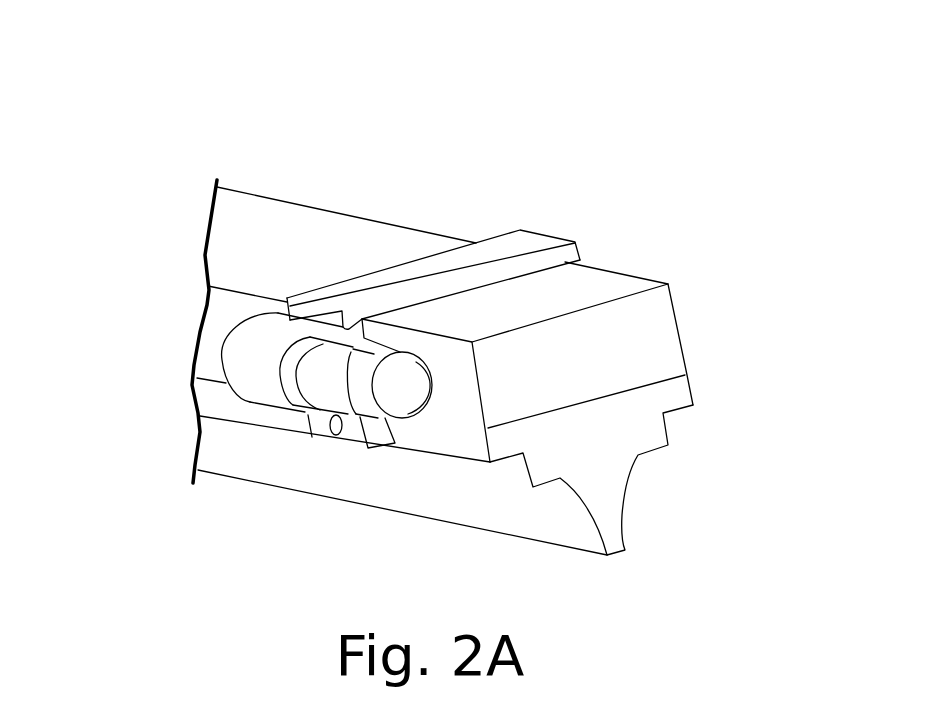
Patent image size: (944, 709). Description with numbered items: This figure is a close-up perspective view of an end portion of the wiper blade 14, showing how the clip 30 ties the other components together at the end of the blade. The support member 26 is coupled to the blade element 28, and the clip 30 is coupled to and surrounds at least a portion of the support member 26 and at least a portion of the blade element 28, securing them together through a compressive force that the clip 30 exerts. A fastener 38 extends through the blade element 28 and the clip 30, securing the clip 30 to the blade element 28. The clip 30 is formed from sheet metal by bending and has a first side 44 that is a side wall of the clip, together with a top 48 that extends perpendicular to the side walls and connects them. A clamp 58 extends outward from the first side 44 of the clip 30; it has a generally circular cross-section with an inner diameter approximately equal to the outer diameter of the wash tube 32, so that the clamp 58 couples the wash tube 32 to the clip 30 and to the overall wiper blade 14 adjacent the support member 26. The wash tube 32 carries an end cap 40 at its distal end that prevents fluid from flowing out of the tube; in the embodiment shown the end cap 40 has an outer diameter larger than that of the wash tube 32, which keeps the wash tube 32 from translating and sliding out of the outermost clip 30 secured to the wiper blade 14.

The wiper blade 14 is at (658, 133).
The support member 26 is at (648, 345).
The blade element 28 is at (628, 414).
The clip 30 is at (355, 290).
The wash tube 32 is at (213, 333).
The fastener 38 is at (332, 425).
The end cap 40 is at (392, 398).
The first side 44 is at (355, 437).
The top 48 is at (493, 242).
The clamp 58 is at (262, 337).